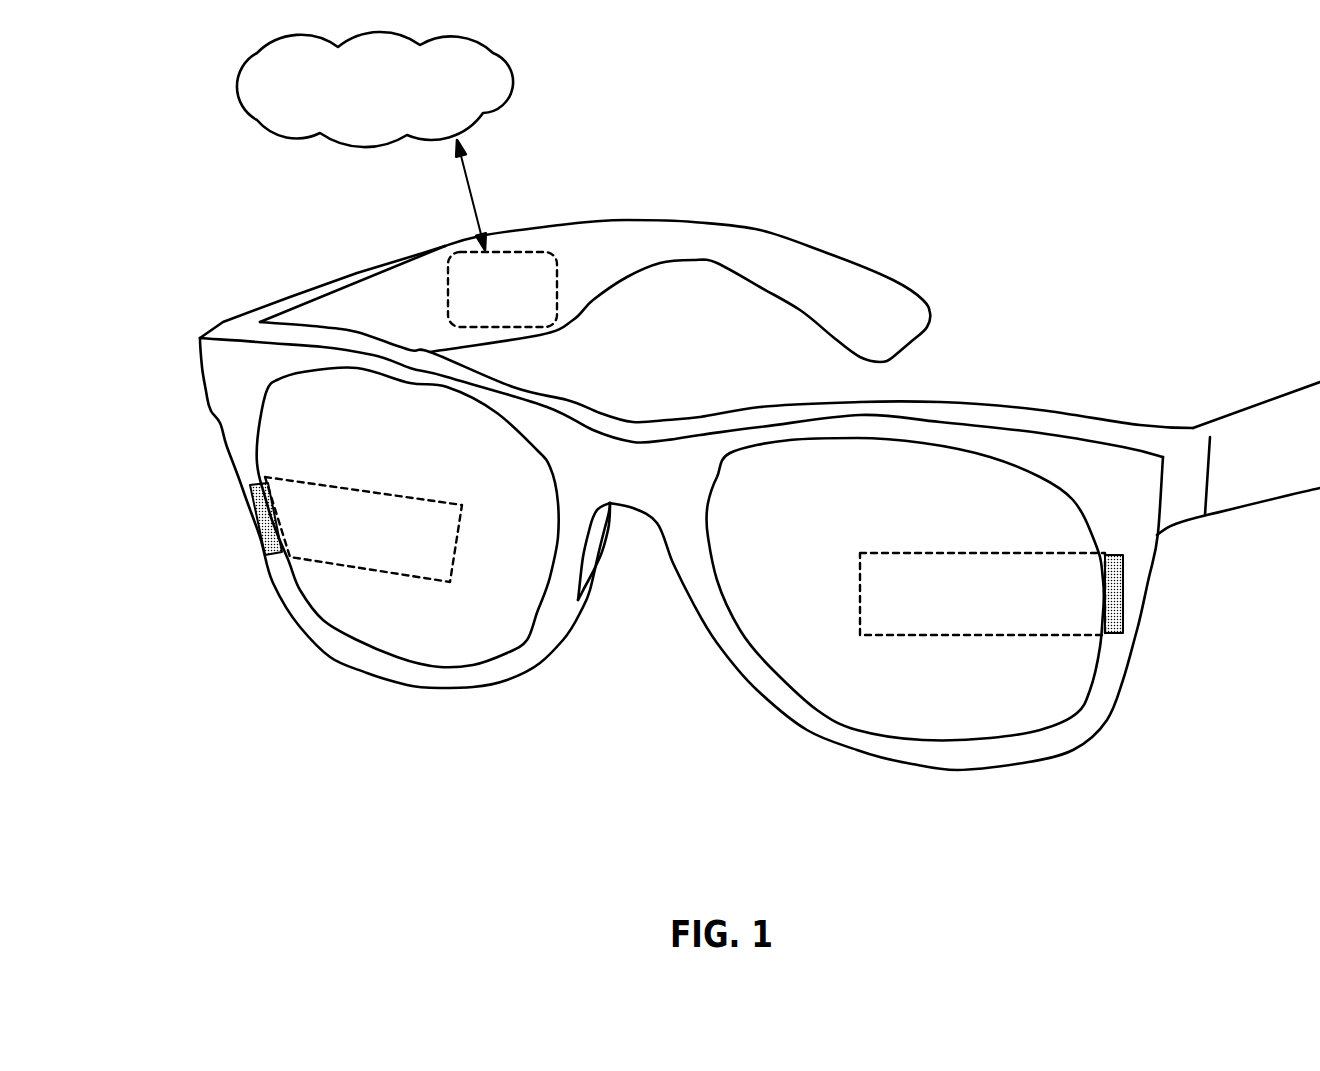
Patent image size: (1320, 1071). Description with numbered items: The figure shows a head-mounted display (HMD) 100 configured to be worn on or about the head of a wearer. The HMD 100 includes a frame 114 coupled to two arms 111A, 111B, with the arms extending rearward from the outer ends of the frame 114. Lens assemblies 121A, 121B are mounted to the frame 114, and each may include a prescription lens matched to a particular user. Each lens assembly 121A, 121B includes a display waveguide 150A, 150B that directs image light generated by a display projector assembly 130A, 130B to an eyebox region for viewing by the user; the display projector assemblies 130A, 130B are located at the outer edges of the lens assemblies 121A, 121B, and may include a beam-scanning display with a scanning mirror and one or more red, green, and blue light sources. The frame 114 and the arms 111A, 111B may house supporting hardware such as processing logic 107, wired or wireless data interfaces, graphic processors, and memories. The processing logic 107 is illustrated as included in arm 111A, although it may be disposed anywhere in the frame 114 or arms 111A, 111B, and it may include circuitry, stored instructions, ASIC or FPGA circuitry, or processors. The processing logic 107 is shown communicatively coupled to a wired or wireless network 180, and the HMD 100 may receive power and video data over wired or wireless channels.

The head-mounted display 100 is at (1254, 81).
The processing logic 107 is at (488, 314).
The arm 111A is at (613, 266).
The arm 111B is at (1280, 470).
The frame 114 is at (255, 381).
The lens assembly 121A is at (525, 561).
The lens assembly 121B is at (935, 479).
The display projector assembly 130A is at (262, 526).
The display projector assembly 130B is at (1122, 598).
The display waveguide 150A is at (293, 480).
The display waveguide 150B is at (1073, 636).
The network 180 is at (434, 97).